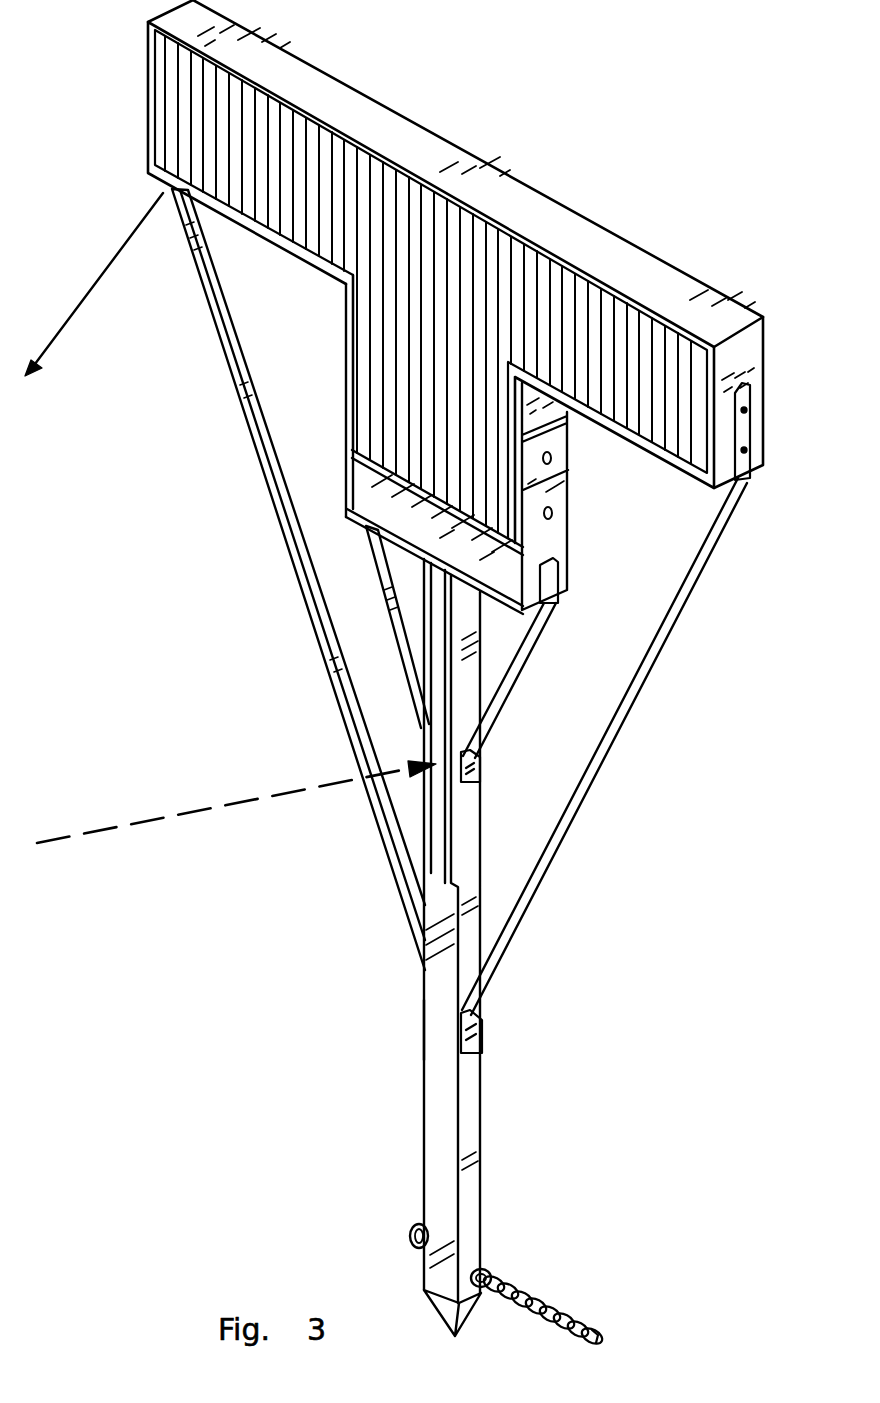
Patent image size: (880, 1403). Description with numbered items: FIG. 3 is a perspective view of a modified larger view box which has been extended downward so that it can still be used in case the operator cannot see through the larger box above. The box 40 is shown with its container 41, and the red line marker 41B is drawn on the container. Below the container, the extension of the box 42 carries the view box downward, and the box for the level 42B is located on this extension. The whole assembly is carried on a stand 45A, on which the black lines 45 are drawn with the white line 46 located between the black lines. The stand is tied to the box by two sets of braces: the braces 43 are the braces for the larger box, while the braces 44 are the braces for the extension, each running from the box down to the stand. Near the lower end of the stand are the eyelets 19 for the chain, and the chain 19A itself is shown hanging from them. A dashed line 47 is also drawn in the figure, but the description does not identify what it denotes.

The eyelet 19 is at (414, 1232).
The chain 19A is at (590, 1328).
The box 40 is at (463, 137).
The container 41 is at (148, 122).
The red line marker 41B is at (455, 158).
The extension of the box 42 is at (347, 388).
The box for the level 42B is at (394, 511).
The braces for the larger box 43 is at (646, 673).
The braces for the extension 44 is at (387, 595).
The black lines on the stand 45 is at (452, 830).
The stand 45A is at (425, 1050).
The white line between the black lines 46 is at (82, 303).
The dashed reference line 47 is at (188, 812).